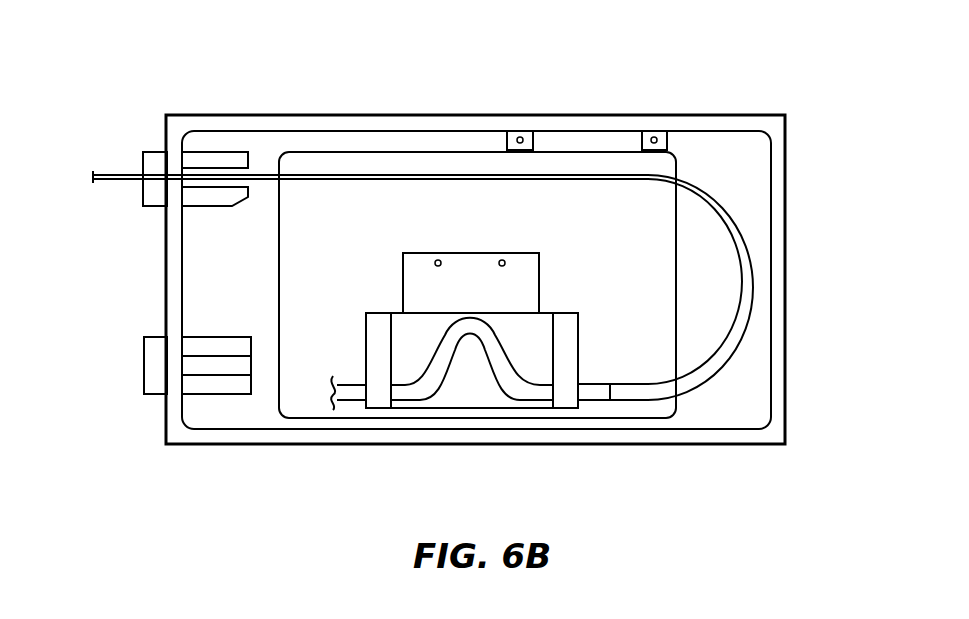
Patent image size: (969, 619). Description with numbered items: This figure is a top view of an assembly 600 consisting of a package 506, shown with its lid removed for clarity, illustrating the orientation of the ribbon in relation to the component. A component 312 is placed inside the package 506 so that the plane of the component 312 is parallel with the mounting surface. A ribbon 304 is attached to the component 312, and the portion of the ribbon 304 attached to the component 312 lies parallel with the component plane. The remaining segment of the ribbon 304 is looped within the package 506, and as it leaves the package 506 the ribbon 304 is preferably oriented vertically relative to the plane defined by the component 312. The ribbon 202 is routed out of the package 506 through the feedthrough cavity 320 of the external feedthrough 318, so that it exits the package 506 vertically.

The optical probe assembly 600 is at (683, 48).
The package 506 is at (590, 115).
The external feedthrough 318 is at (156, 152).
The feedthrough cavity 320 is at (250, 166).
The ribbon 304 is at (322, 175).
The ribbon 202 is at (120, 173).
The component 312 is at (467, 410).